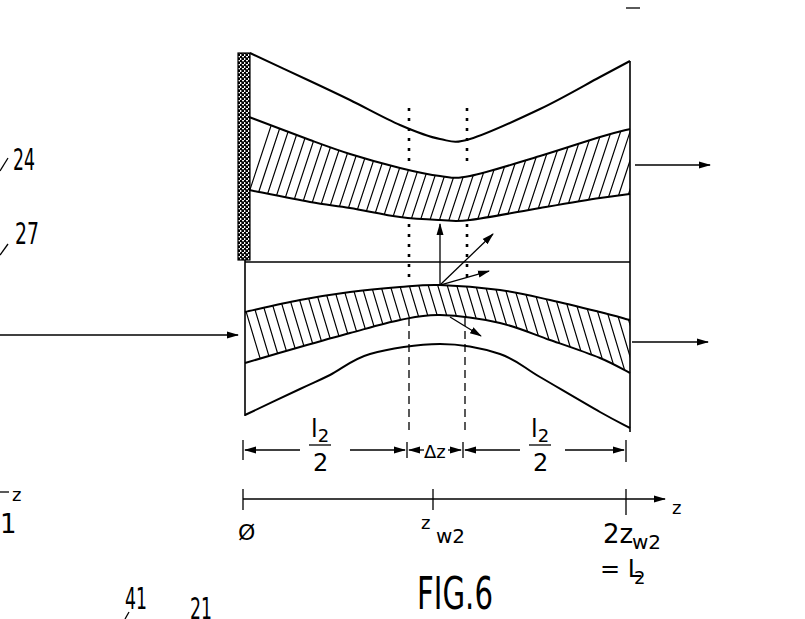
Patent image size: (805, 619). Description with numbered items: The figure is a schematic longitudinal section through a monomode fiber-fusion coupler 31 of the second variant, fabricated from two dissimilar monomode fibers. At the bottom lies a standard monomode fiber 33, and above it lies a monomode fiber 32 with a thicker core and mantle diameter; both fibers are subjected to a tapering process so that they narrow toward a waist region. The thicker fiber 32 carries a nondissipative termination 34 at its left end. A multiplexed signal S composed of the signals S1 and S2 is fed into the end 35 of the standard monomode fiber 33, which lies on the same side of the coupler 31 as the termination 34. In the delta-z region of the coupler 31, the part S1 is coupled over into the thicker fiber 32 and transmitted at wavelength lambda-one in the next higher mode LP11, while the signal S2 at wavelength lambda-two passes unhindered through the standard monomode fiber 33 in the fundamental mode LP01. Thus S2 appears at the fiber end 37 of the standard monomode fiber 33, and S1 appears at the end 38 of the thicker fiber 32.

The monomode fiber-fusion coupler 31 is at (468, 89).
The monomode fiber 32 is at (296, 112).
The standard monomode fiber 33 is at (243, 398).
The nondissipative termination 34 is at (238, 90).
The end of the standard monomode fiber 35 is at (243, 318).
The fiber end of the standard monomode fiber 37 is at (631, 372).
The end of the thicker fiber 38 is at (631, 128).